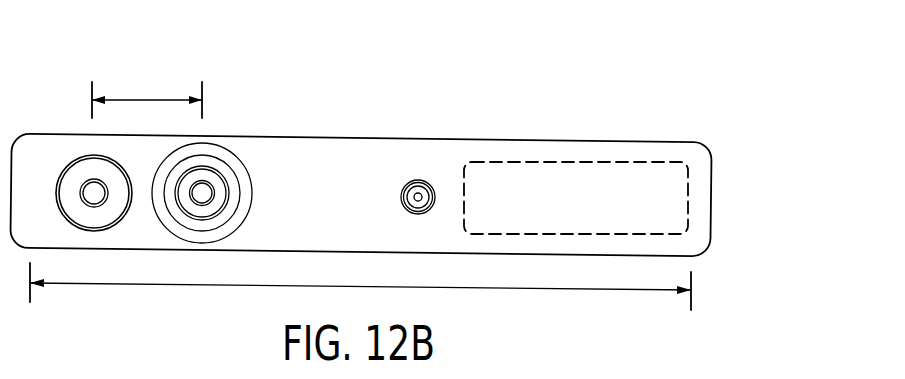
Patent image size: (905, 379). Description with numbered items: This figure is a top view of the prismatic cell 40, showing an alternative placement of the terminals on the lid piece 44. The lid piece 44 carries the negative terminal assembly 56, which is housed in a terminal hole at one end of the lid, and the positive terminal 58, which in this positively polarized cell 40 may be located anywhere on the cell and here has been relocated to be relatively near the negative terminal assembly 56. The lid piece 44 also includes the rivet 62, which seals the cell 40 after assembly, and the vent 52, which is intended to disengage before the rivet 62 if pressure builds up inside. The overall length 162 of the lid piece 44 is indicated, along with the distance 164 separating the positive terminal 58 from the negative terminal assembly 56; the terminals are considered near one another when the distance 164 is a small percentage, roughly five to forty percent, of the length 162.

The cell 40 is at (603, 56).
The lid piece 44 is at (362, 155).
The vent 52 is at (577, 162).
The negative terminal assembly 56 is at (252, 192).
The positive terminal 58 is at (57, 190).
The rivet 62 is at (422, 181).
The length 162 is at (193, 284).
The distance 164 is at (143, 100).